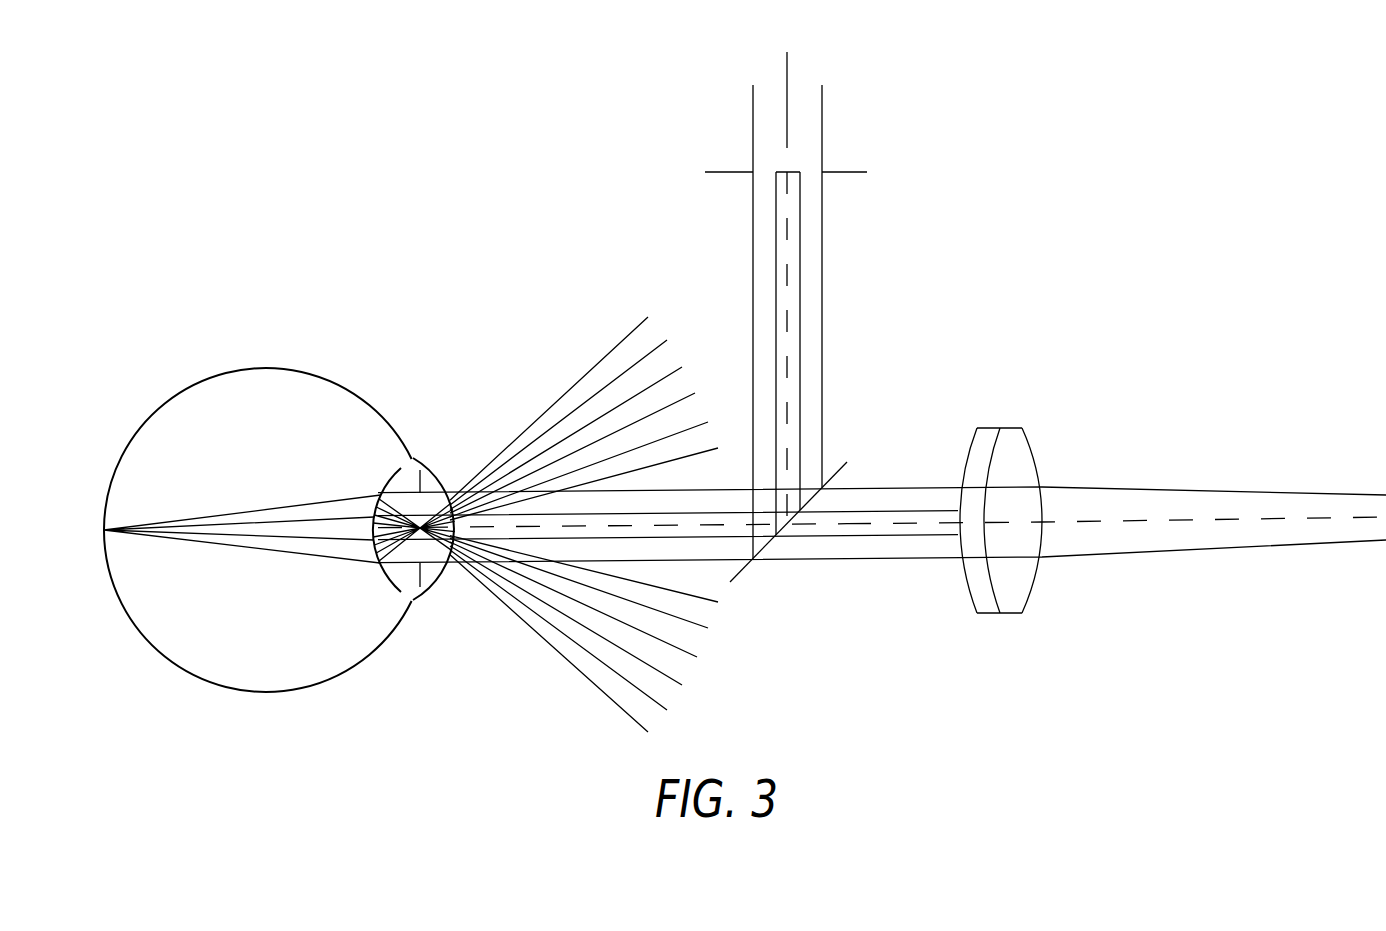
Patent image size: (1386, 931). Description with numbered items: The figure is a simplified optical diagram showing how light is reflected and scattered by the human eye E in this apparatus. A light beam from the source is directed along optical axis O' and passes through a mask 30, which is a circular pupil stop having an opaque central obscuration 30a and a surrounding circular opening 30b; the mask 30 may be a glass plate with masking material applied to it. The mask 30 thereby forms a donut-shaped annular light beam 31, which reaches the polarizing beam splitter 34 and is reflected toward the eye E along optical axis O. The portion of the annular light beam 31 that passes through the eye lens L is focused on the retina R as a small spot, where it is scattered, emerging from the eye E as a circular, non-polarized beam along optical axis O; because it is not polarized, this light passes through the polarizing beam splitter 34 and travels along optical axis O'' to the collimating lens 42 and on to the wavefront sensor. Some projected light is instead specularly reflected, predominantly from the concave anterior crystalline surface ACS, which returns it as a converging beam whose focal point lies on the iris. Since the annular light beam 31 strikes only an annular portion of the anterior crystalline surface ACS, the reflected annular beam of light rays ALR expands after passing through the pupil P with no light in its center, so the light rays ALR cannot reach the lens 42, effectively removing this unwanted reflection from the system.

The eye E is at (262, 367).
The retina R is at (153, 418).
The anterior crystalline surface ACS is at (393, 574).
The eye lens L is at (410, 592).
The pupil P is at (423, 481).
The annular beam of light rays ALR is at (727, 442).
The annular light beam 31 is at (670, 498).
The optical axis O is at (612, 572).
The optical axis O'' is at (1116, 568).
The optical axis O' is at (835, 276).
The mask 30 is at (847, 173).
The opaque central obscuration 30a is at (790, 168).
The surrounding circular opening 30b is at (755, 172).
The polarizing beam splitter 34 is at (843, 465).
The collimating lens 42 is at (998, 428).